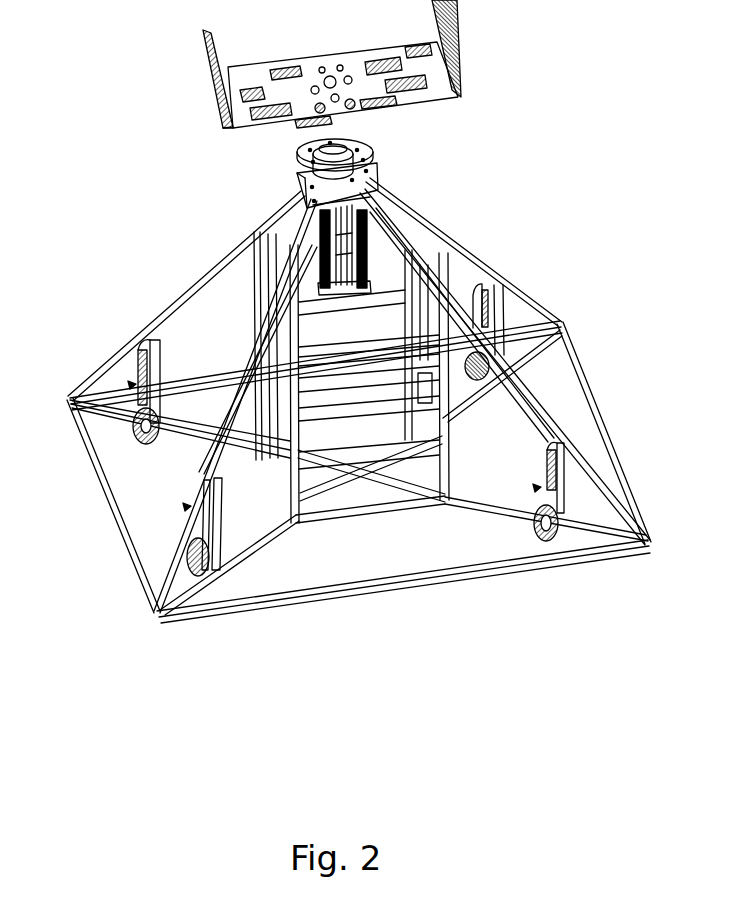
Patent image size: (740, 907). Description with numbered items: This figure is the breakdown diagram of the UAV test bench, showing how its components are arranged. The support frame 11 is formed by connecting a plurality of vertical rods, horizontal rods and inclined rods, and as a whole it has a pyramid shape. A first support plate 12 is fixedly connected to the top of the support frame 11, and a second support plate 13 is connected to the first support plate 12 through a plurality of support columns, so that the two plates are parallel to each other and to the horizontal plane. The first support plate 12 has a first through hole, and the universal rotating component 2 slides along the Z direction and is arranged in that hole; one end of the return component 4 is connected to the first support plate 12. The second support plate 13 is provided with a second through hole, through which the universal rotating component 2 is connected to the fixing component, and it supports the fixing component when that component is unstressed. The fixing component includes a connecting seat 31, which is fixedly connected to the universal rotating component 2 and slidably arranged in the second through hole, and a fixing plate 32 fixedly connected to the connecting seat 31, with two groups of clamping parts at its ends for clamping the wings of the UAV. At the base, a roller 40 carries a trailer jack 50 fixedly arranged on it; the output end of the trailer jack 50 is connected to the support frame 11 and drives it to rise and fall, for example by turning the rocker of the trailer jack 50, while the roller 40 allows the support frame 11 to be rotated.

The universal rotating component 2 is at (337, 273).
The return component 4 is at (378, 232).
The support frame 11 is at (480, 267).
The first support plate 12 is at (298, 178).
The second support plate 13 is at (372, 159).
The connecting seat 31 is at (345, 143).
The fixing plate 32 is at (288, 66).
The roller 40 is at (132, 433).
The trailer jack 50 is at (143, 343).